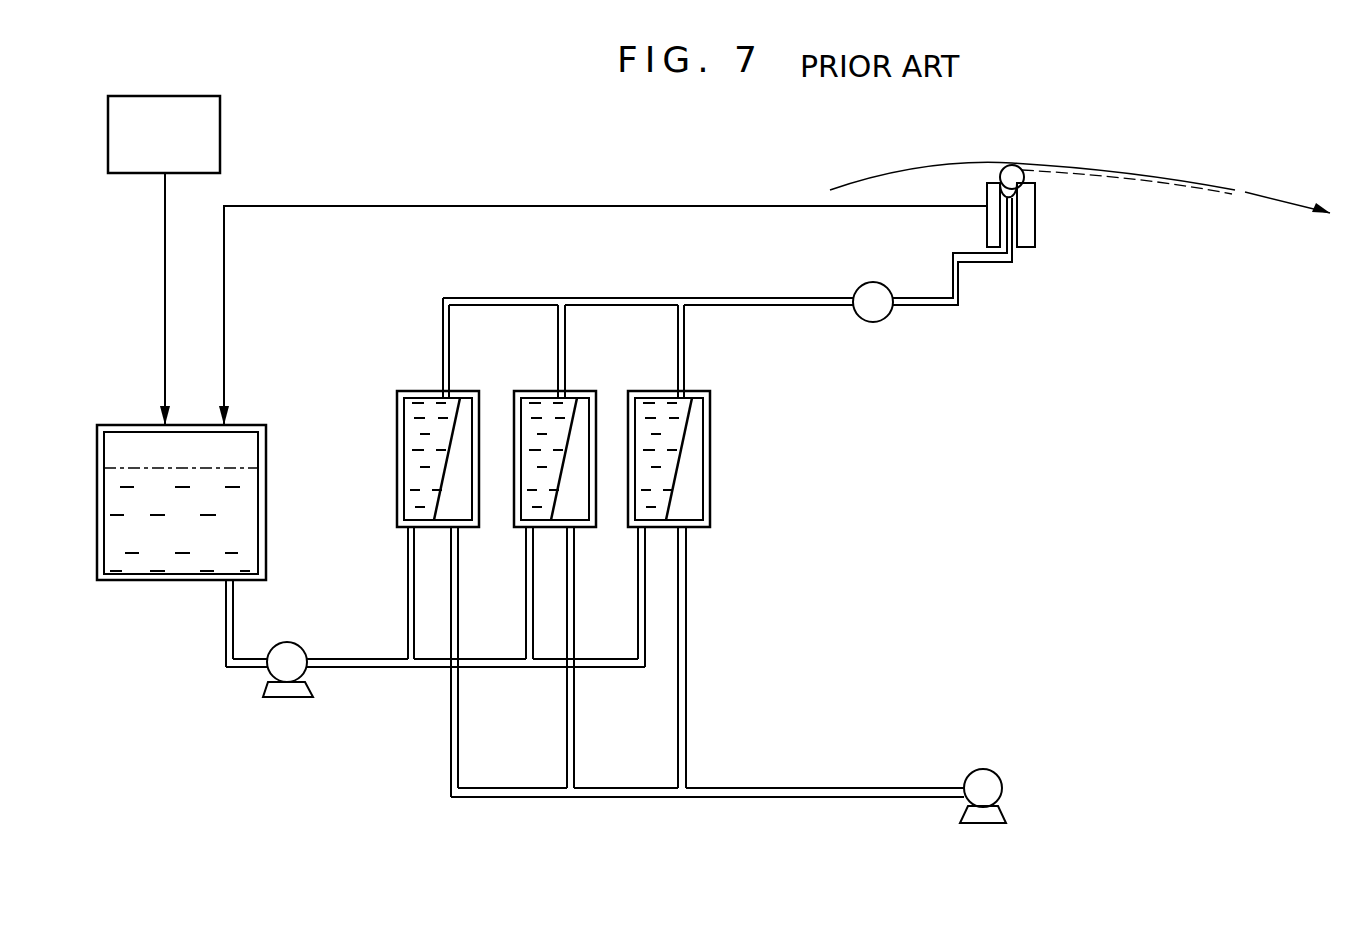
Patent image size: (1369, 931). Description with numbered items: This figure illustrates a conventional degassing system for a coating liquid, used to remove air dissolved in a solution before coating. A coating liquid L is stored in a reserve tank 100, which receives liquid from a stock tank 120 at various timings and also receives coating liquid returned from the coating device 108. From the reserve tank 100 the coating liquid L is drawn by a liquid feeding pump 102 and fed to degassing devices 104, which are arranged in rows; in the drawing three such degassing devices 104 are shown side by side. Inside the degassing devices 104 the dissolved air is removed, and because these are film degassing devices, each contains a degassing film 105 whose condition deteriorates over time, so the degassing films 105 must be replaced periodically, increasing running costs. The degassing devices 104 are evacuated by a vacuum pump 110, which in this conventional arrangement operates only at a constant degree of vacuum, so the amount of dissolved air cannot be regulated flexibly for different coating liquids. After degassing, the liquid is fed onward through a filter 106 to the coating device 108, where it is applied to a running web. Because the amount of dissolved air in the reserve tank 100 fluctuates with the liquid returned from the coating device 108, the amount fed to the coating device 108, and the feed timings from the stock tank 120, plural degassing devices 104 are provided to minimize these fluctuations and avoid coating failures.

The stock tank 120 is at (226, 117).
The reserve tank 100 is at (206, 473).
The coating liquid L is at (240, 515).
The liquid feeding pump 102 is at (300, 643).
The degassing device 104 is at (420, 392).
The degassing film 105 is at (448, 490).
The filter 106 is at (865, 322).
The coating device 108 is at (1035, 228).
The vacuum pump 110 is at (985, 768).